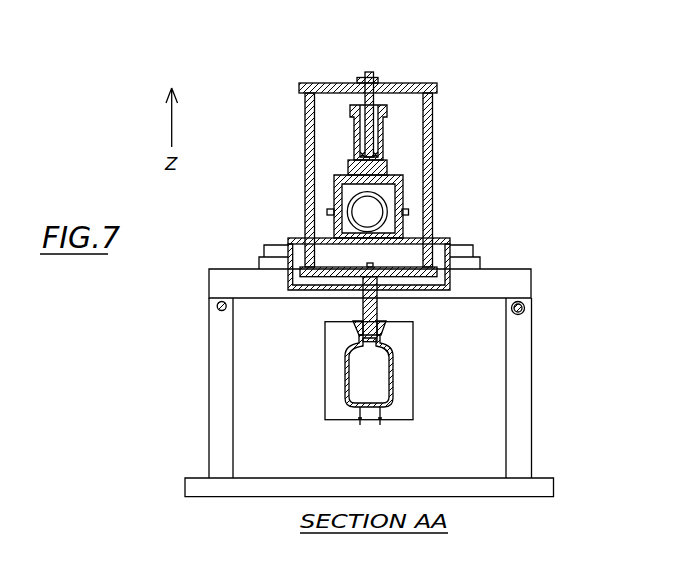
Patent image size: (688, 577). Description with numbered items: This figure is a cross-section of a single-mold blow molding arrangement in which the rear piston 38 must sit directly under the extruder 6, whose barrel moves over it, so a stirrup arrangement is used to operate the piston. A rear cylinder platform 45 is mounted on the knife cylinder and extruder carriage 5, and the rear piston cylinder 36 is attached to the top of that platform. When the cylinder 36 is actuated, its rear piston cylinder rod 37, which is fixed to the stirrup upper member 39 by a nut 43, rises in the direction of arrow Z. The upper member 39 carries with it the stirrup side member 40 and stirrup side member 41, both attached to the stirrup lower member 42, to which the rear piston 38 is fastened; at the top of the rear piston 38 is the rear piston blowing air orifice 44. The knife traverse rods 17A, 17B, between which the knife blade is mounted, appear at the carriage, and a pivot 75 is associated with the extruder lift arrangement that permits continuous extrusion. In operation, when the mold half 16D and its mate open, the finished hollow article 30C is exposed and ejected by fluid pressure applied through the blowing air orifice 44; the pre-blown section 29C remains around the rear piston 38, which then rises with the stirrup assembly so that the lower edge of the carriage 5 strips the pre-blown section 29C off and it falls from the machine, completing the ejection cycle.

The knife cylinder and extruder carriage 5 is at (290, 238).
The extruder 6 is at (387, 207).
The mold half 16D is at (406, 358).
The knife traverse rod 17A is at (524, 311).
The knife traverse rod 17B is at (225, 307).
The pre-blown section 29C is at (357, 320).
The finished hollow article 30C is at (392, 390).
The rear piston cylinder 36 is at (350, 117).
The rear piston cylinder rod 37 is at (365, 78).
The rear piston 38 is at (378, 303).
The stirrup upper member 39 is at (437, 88).
The stirrup side member 40 is at (432, 150).
The stirrup side member 41 is at (305, 167).
The stirrup lower member 42 is at (450, 282).
The nut 43 is at (375, 82).
The rear piston blowing air orifice 44 is at (370, 263).
The rear cylinder platform 45 is at (402, 222).
The pivot 75 is at (327, 211).